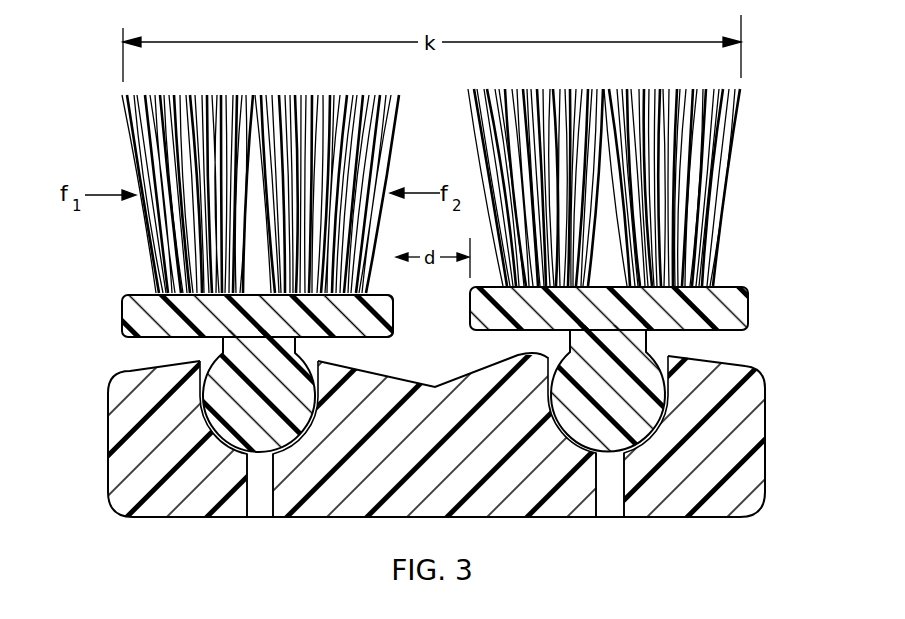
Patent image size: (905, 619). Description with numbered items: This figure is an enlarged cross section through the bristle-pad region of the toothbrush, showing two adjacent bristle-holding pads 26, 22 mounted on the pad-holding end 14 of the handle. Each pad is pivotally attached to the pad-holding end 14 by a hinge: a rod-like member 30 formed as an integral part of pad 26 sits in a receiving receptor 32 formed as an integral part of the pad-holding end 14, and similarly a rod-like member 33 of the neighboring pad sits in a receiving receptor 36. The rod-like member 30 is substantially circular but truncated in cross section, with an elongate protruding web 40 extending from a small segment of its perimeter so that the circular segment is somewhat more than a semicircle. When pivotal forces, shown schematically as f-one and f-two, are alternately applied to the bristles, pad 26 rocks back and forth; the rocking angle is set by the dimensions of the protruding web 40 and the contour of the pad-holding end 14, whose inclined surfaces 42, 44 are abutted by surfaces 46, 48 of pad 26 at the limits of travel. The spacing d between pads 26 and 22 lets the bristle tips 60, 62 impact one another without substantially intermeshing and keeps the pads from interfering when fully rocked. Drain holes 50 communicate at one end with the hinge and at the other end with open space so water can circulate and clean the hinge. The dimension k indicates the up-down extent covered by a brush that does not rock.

The pad-holding end 14 is at (380, 517).
The bristle-holding pad 22 is at (720, 304).
The bristle-holding pad 26 is at (145, 312).
The rod-like member 30 is at (262, 420).
The receiving receptor 32 is at (212, 402).
The rod-like member 33 is at (615, 402).
The receiving receptor 36 is at (675, 372).
The protruding web 40 is at (262, 353).
The inclined surface 42 is at (133, 369).
The inclined surface 44 is at (410, 372).
The surface of pad 46 is at (160, 338).
The surface of pad 48 is at (378, 318).
The drain hole 50 is at (262, 500).
The bristle tips 60 is at (176, 95).
The bristle tips 62 is at (683, 90).